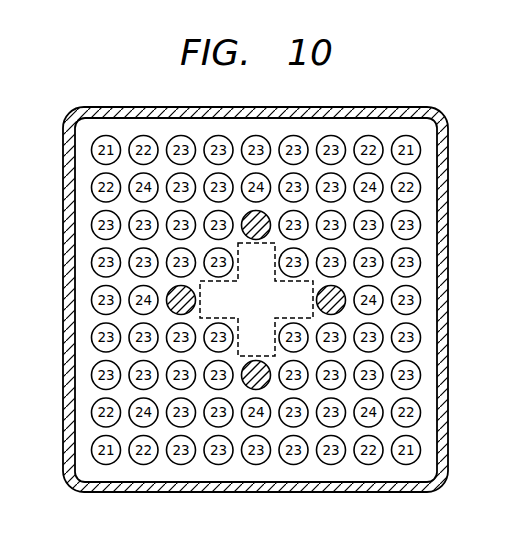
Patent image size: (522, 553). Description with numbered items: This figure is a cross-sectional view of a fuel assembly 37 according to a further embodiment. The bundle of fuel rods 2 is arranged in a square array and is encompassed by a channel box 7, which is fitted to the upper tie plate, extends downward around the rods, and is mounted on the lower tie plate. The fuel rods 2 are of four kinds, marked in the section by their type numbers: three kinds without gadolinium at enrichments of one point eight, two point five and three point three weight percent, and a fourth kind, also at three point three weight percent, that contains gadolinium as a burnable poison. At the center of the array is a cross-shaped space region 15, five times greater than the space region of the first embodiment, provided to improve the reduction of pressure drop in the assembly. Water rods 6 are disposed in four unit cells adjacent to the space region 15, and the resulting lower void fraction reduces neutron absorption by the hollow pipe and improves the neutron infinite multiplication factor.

The fuel assembly 37 is at (455, 249).
The channel box 7 is at (65, 268).
The fuel rods 2 is at (335, 137).
The water rods 6 is at (343, 310).
The space region 15 is at (238, 357).